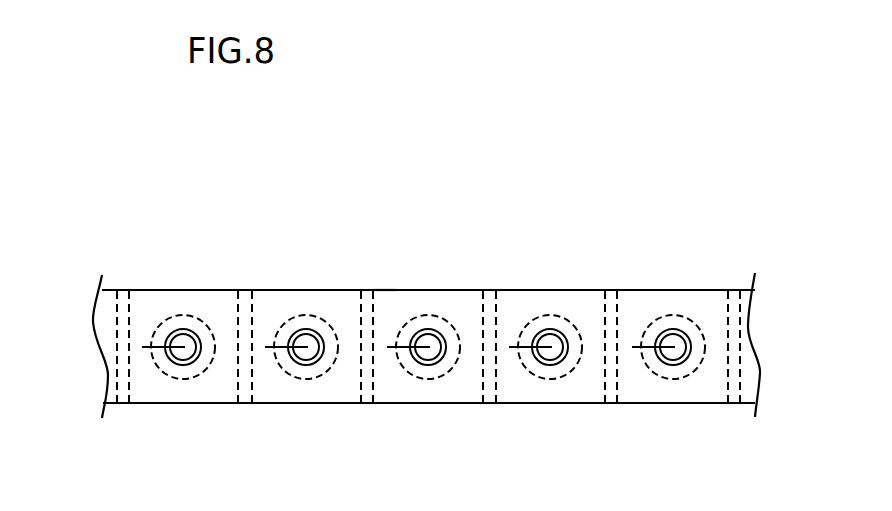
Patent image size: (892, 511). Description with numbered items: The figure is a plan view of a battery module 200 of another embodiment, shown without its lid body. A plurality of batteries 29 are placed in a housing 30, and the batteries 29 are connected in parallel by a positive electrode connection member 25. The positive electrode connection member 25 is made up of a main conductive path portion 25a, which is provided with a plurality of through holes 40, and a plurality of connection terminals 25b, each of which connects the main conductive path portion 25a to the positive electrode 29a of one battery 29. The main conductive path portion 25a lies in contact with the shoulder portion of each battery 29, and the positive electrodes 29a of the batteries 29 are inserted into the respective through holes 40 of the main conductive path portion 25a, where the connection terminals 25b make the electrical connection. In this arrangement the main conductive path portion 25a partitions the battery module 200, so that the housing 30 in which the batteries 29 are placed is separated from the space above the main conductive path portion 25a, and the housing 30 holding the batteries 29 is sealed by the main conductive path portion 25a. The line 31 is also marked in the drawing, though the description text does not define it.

The battery module 200 is at (663, 158).
The positive electrode connection member 25 is at (422, 184).
The main conductive path portion 25a is at (340, 300).
The connection terminal 25b is at (392, 343).
The battery 29 is at (553, 313).
The positive electrode 29a is at (432, 330).
The housing 30 is at (317, 403).
The perforation line 31 is at (498, 385).
The through hole 40 is at (304, 322).